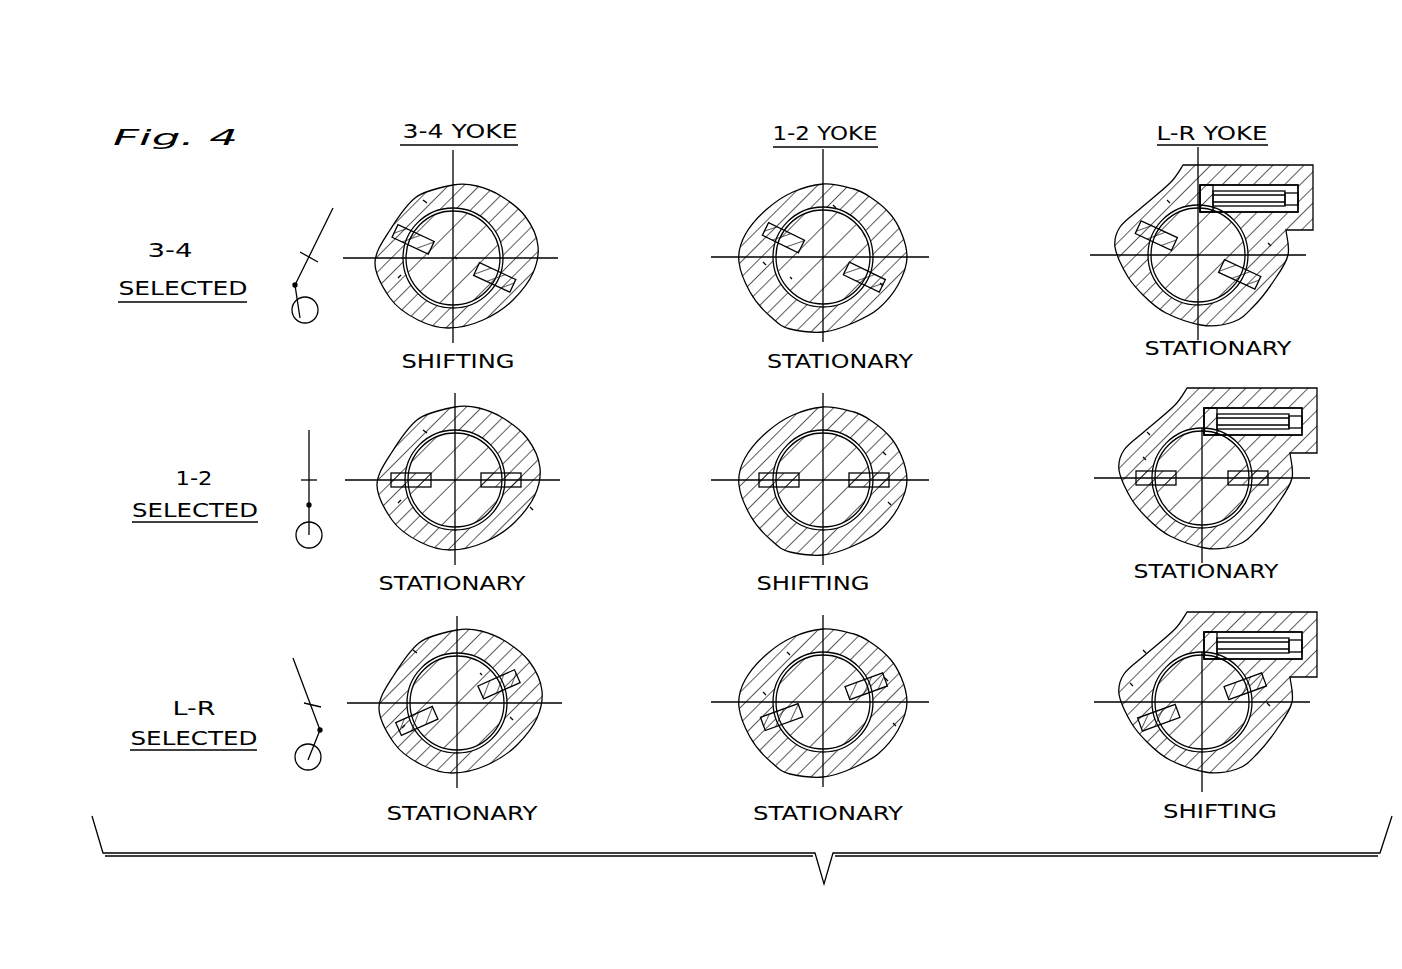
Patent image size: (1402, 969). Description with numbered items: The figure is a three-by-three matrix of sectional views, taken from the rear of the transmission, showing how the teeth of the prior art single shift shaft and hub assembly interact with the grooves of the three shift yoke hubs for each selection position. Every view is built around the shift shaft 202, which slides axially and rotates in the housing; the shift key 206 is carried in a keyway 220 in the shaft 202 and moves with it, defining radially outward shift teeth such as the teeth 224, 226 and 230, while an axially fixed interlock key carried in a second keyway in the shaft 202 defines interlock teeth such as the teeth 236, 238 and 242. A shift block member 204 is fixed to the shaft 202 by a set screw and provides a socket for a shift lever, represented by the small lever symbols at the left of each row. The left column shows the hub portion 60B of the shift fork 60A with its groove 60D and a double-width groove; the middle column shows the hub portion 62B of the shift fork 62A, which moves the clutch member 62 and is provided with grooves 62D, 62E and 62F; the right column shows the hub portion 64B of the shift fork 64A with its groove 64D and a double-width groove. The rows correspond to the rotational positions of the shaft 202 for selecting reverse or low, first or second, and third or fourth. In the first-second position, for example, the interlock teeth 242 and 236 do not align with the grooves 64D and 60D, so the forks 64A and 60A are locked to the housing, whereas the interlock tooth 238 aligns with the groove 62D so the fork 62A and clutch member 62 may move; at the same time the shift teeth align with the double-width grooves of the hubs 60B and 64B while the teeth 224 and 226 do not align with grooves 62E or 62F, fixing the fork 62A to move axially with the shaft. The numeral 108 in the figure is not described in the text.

The shift yoke 60A is at (517, 232).
The hub portion 60B is at (423, 200).
The groove 60D is at (398, 278).
The clutch member 62 is at (883, 660).
The shift yoke 62A is at (862, 210).
The hub portion 62B is at (833, 205).
The groove 62D is at (763, 262).
The groove 62E is at (883, 452).
The groove 62F is at (880, 283).
The shift yoke 64A is at (1295, 227).
The hub portion 64B is at (1167, 200).
The groove 64D is at (1143, 457).
The shift shaft 108 is at (455, 257).
The shift shaft 202 is at (480, 230).
The shift block member 204 is at (1247, 195).
The shift key 206 is at (1217, 210).
The keyway 220 is at (480, 673).
The shift tooth 224 is at (513, 277).
The shift tooth 226 is at (873, 267).
The shift tooth 230 is at (1267, 265).
The interlock tooth 236 is at (395, 237).
The interlock tooth 238 is at (767, 225).
The interlock tooth 242 is at (1133, 233).